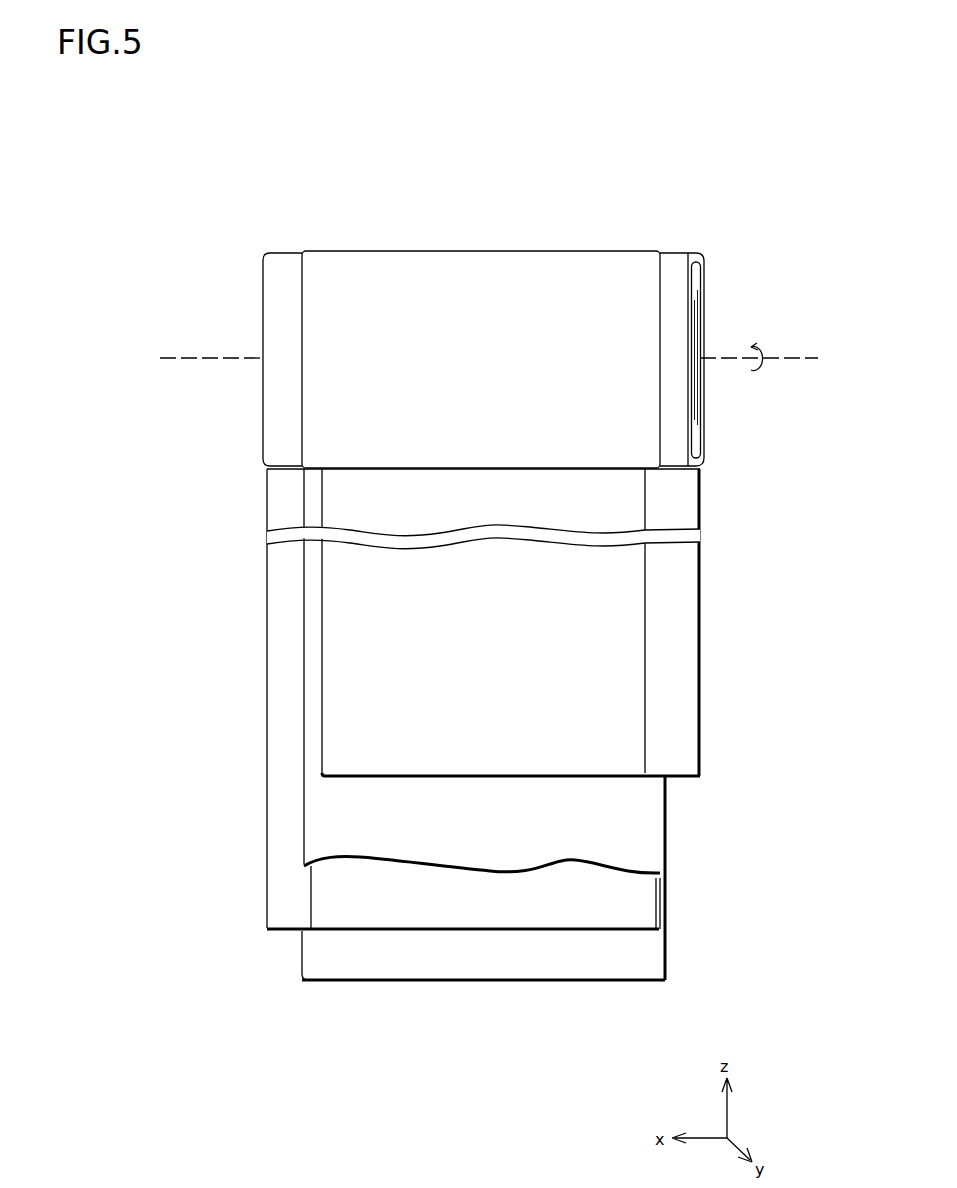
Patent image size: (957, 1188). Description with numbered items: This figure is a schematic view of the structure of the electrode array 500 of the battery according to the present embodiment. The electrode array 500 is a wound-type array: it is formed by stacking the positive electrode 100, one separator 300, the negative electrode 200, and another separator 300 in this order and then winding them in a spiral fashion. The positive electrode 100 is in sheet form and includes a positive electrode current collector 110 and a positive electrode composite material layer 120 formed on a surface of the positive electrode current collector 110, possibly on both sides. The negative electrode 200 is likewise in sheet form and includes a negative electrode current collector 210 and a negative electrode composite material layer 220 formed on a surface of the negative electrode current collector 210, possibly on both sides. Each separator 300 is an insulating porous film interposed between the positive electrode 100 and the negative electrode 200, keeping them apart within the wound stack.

The electrode array 500 is at (240, 191).
The positive electrode 100 is at (596, 622).
The positive electrode current collector 110 is at (683, 652).
The positive electrode composite material layer 120 is at (638, 600).
The negative electrode 200 is at (371, 699).
The negative electrode current collector 210 is at (268, 820).
The negative electrode composite material layer 220 is at (352, 907).
The separator 300 is at (302, 970).